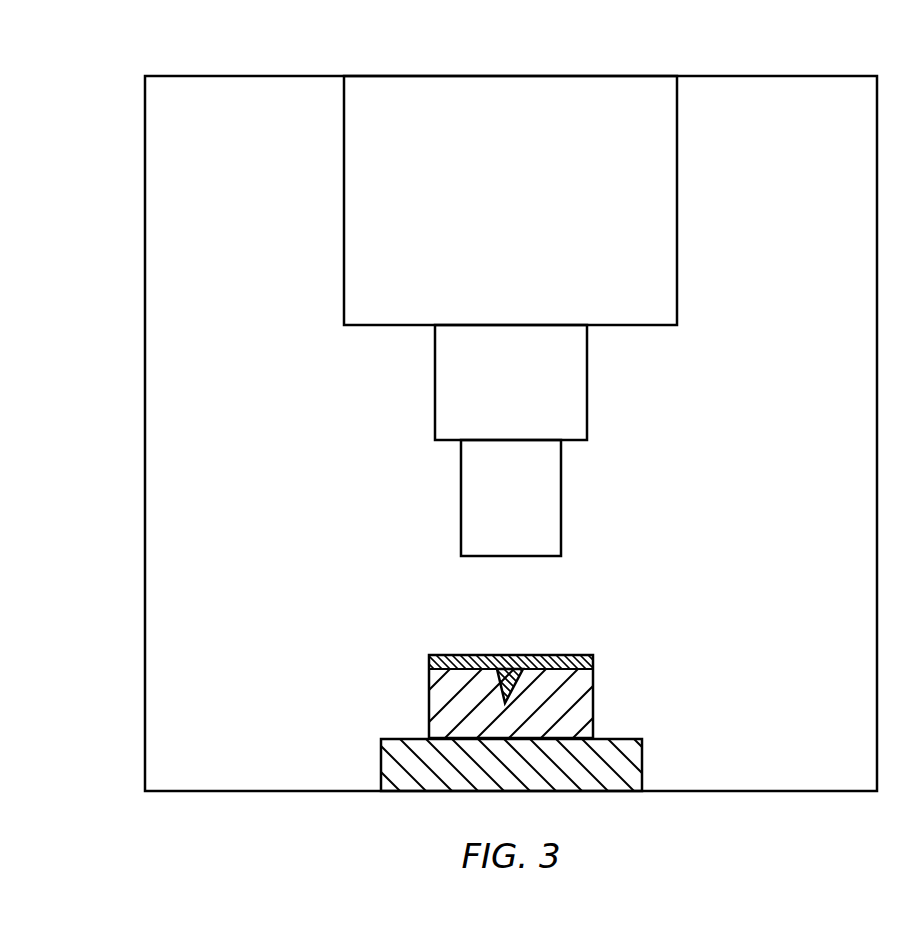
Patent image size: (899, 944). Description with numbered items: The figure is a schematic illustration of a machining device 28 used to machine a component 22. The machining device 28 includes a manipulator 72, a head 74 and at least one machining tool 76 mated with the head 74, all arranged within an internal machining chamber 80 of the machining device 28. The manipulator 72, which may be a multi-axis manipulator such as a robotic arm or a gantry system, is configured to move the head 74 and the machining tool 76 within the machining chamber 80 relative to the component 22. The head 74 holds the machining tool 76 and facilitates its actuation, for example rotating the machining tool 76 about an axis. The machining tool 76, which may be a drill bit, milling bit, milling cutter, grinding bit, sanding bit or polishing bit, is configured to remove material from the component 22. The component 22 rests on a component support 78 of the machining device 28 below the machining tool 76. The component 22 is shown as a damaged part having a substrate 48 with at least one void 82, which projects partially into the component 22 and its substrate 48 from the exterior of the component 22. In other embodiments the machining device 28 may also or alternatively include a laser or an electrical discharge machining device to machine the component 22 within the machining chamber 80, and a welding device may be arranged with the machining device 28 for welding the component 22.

The machining device 28 is at (194, 73).
The manipulator 72 is at (678, 201).
The head 74 is at (588, 384).
The machining tool 76 is at (562, 498).
The internal machining chamber 80 is at (254, 523).
The component 22 is at (394, 678).
The substrate 48 is at (593, 697).
The void 82 is at (517, 686).
The component support 78 is at (642, 765).